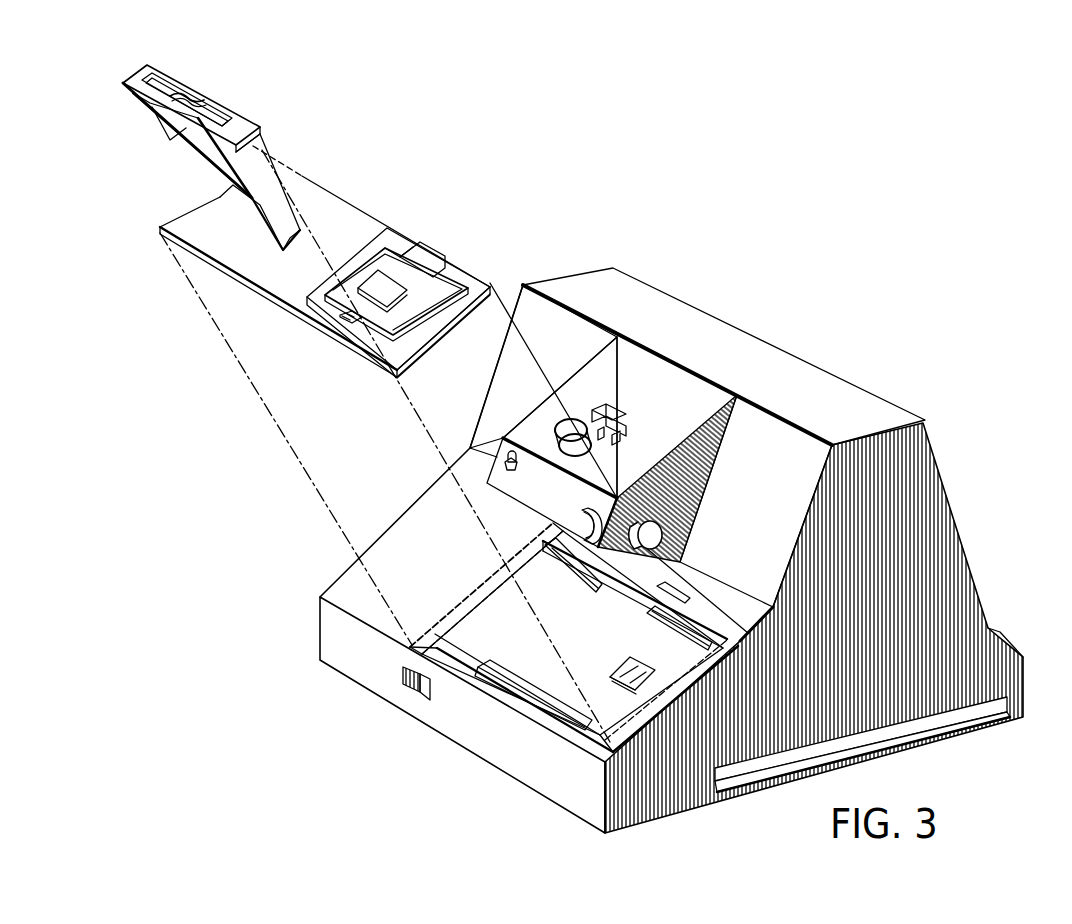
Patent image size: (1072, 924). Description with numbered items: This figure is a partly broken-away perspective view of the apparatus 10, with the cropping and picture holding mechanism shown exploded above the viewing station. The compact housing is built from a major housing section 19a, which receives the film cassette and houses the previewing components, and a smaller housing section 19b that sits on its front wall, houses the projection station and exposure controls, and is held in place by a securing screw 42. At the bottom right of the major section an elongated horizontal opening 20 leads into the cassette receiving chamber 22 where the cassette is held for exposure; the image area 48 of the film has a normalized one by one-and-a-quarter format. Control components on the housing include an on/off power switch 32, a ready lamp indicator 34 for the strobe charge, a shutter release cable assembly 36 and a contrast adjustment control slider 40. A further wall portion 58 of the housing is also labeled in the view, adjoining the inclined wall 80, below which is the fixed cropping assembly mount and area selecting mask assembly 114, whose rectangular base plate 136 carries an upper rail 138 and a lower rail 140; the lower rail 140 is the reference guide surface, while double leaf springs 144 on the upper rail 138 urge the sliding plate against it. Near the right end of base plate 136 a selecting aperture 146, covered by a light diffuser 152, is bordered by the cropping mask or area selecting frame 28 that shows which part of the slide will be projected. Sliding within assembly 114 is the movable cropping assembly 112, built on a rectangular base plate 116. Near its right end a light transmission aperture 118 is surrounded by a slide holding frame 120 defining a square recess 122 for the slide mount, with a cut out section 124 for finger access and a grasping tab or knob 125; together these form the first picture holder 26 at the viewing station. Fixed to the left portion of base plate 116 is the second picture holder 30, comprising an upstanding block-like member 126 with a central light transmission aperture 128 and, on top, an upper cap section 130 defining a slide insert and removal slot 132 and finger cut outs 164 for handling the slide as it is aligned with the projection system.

The apparatus 10 is at (947, 463).
The major housing section 19a is at (827, 373).
The smaller housing section 19b is at (700, 420).
The elongated horizontal opening 20 is at (872, 728).
The cassette receiving chamber 22 is at (772, 760).
The first picture holder 26 is at (389, 225).
The cropping mask or area selecting frame 28 is at (603, 663).
The second picture holder 30 is at (254, 112).
The on/off power switch 32 is at (428, 688).
The ready lamp indicator 34 is at (513, 460).
The shutter release cable assembly 36 is at (563, 430).
The contrast adjustment control slider 40 is at (613, 417).
The securing screw 42 is at (645, 548).
The image area of the film unit 48 is at (588, 512).
The side panel 58 is at (788, 443).
The inclined wall 80 is at (723, 595).
The movable area selecting or cropping assembly 112 is at (362, 366).
The cropping assembly mount and area selecting mask assembly 114 is at (635, 744).
The base plate 116 is at (280, 268).
The light transmission aperture 118 is at (375, 287).
The slide holding frame 120 is at (447, 277).
The square recess 122 is at (388, 262).
The cut out section 124 is at (418, 262).
The grasping tab or knob 125 is at (343, 312).
The block-like member 126 is at (267, 180).
The light transmission aperture 128 is at (200, 137).
The upper cap section 130 is at (200, 93).
The slide insert and removal slot 132 is at (160, 82).
The base plate 136 is at (687, 687).
The upper rail 138 is at (550, 523).
The lower rail 140 is at (523, 684).
The double leaf springs 144 is at (587, 585).
The selecting aperture 146 is at (623, 667).
The light diffuser 152 is at (637, 687).
The finger cut outs 164 is at (188, 98).